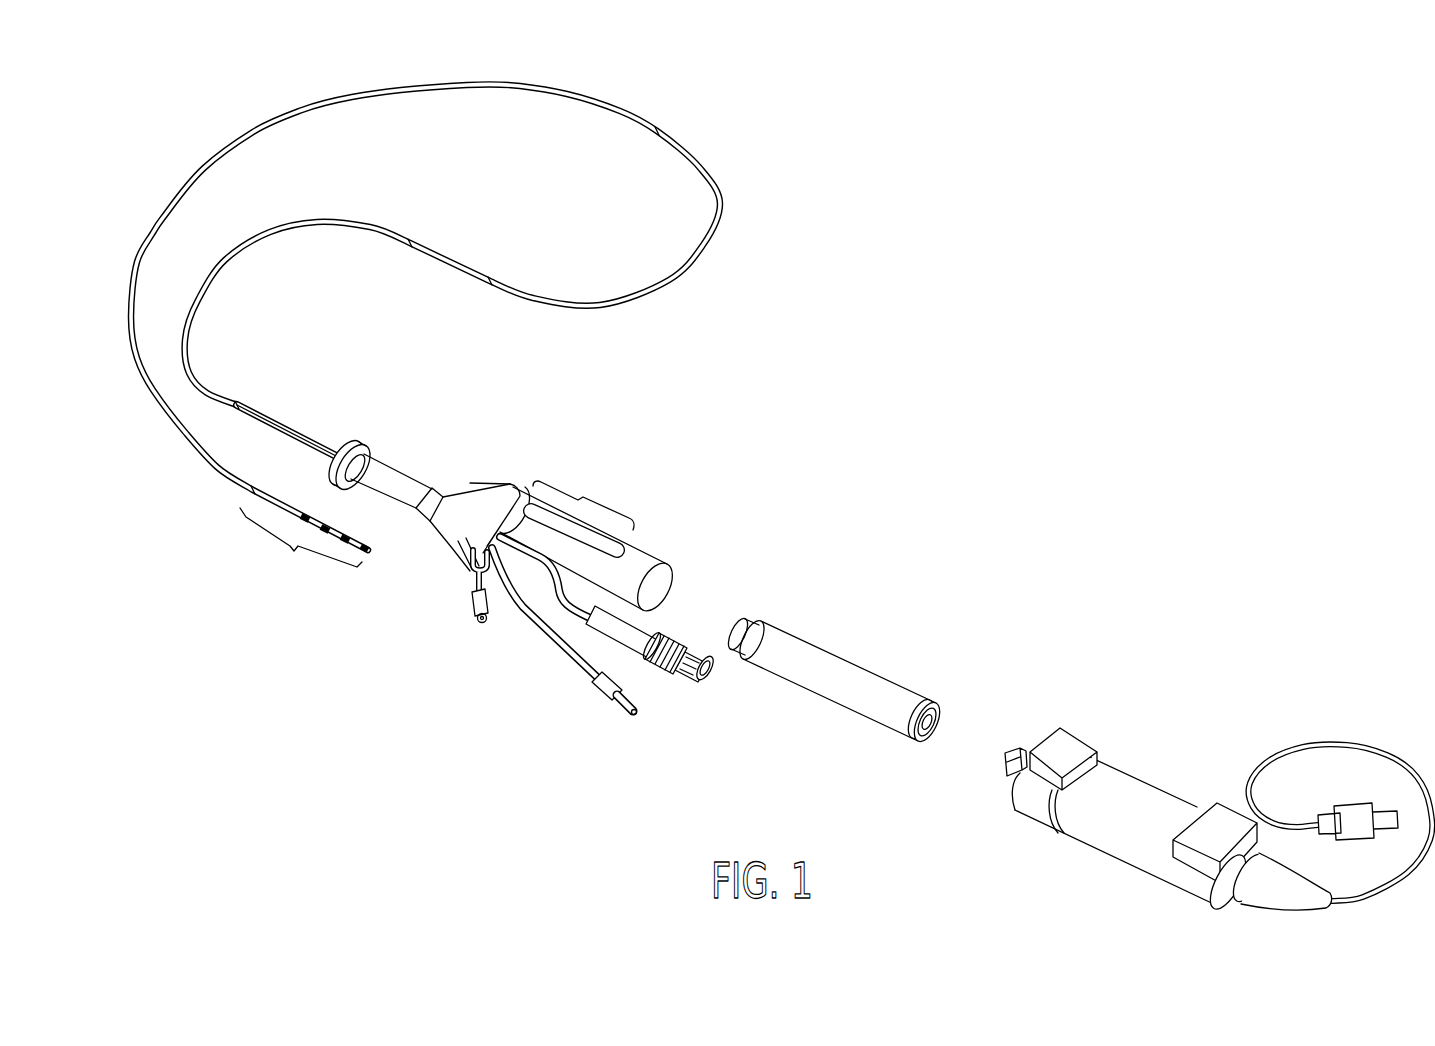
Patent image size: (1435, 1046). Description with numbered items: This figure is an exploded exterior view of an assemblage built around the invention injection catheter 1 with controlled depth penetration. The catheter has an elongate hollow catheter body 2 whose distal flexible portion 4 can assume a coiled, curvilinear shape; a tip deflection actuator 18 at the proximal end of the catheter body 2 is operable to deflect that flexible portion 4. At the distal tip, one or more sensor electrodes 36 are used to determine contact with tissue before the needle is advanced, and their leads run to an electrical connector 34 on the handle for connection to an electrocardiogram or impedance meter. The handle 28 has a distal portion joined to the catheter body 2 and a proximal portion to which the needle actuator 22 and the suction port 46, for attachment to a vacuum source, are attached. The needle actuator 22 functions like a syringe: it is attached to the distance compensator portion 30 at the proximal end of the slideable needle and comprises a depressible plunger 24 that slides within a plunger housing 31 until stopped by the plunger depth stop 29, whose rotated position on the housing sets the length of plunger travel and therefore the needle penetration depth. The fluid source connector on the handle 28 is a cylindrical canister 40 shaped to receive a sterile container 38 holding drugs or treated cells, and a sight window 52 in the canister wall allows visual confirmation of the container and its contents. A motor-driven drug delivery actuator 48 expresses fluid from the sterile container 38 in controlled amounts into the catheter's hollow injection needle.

The injection catheter 1 is at (781, 483).
The catheter body 2 is at (576, 93).
The distal flexible portion 4 is at (301, 547).
The tip deflection actuator 18 is at (367, 440).
The needle actuator 22 is at (713, 677).
The depressible plunger 24 is at (700, 685).
The handle 28 is at (471, 484).
The plunger depth stop 29 is at (677, 636).
The distance compensator portion 30 is at (548, 612).
The plunger housing 31 is at (600, 638).
The electrical connector 34 is at (633, 717).
The sensor electrodes 36 is at (347, 539).
The sterile container 38 is at (883, 670).
The canister 40 is at (662, 557).
The suction port 46 is at (477, 617).
The drug delivery actuator 48 is at (1107, 853).
The sight window 52 is at (582, 510).